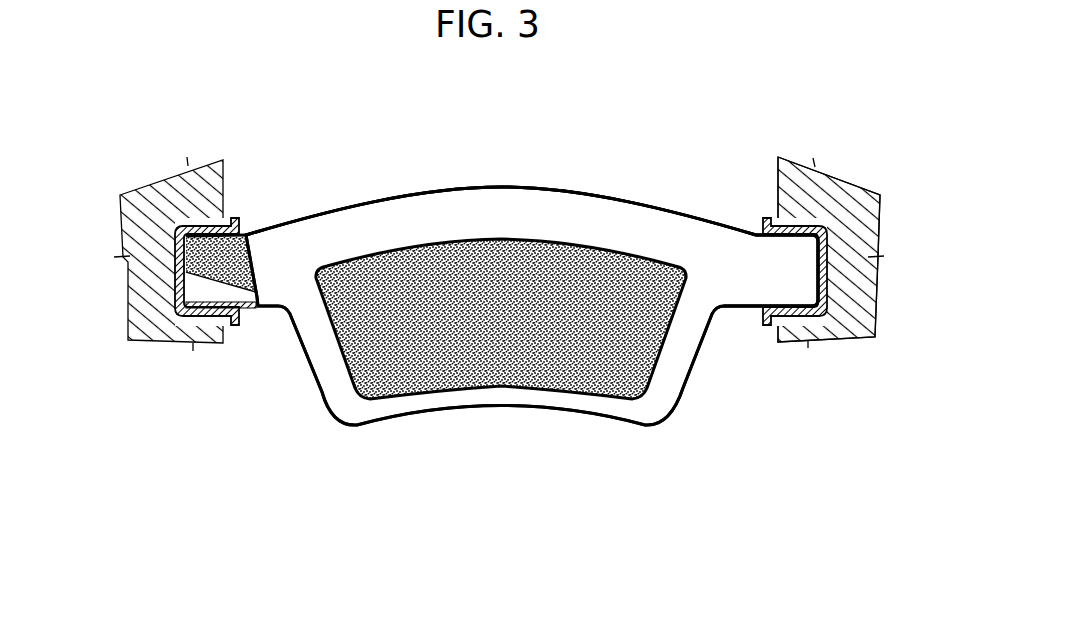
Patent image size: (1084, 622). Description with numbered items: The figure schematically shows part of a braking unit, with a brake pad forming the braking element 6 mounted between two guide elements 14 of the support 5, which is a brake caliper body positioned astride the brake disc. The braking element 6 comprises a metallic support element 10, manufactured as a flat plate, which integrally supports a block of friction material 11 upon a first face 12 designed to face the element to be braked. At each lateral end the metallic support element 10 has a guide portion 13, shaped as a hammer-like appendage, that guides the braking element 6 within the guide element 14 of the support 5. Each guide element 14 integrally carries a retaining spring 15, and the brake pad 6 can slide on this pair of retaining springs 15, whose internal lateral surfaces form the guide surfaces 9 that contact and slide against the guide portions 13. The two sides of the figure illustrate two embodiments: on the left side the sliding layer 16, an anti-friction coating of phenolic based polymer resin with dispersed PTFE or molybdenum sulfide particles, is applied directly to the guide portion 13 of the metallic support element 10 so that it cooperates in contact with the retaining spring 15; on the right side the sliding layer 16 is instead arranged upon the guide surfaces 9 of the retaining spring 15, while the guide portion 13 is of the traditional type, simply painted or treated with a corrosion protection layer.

The support 5 is at (841, 165).
The braking element 6 is at (700, 485).
The guide surface 9 is at (797, 303).
The metallic support element 10 is at (363, 213).
The block of friction material 11 is at (507, 350).
The first face 12 is at (550, 212).
The guide portion 13 is at (260, 250).
The guide element 14 is at (850, 200).
The retaining spring 15 is at (749, 207).
The sliding layer 16 is at (199, 314).